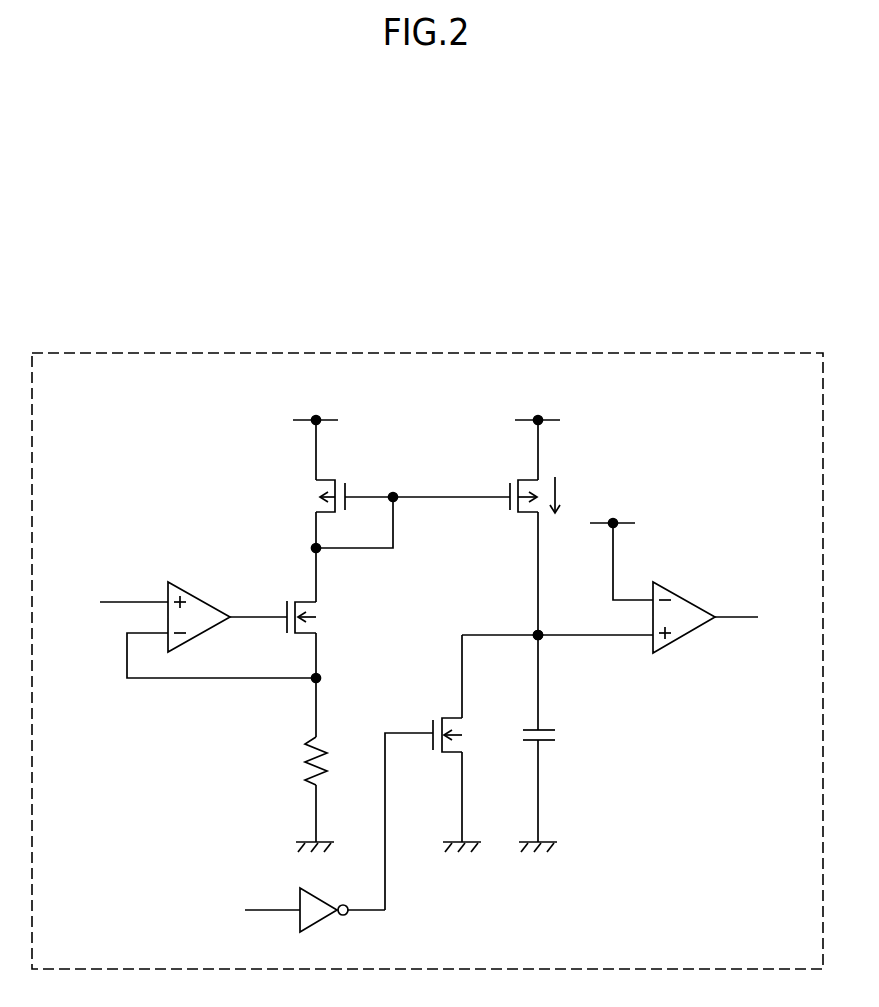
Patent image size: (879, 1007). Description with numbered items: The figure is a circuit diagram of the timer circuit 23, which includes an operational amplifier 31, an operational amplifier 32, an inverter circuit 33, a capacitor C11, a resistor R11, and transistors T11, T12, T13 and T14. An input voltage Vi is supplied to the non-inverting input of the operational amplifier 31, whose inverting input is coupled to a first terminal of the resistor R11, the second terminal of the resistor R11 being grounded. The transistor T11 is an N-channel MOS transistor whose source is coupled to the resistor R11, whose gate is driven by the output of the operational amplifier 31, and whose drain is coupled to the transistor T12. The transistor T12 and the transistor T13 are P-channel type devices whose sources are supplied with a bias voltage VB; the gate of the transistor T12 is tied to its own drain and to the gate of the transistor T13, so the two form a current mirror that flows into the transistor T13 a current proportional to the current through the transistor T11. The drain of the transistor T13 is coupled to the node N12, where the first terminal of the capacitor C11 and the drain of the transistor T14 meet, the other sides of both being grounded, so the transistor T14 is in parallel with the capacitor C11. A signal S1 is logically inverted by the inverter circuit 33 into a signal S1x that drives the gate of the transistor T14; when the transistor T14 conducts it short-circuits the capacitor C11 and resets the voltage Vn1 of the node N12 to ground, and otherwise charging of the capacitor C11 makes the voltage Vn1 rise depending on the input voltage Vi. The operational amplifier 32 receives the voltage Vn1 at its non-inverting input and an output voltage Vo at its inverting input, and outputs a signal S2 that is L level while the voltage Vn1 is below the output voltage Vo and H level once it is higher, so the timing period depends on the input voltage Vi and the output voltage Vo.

The timer circuit 23 is at (740, 352).
The operational amplifier 31 is at (208, 603).
The operational amplifier 32 is at (690, 600).
The inverter circuit 33 is at (319, 921).
The transistor T11 is at (285, 602).
The transistor T12 is at (345, 481).
The transistor T13 is at (510, 481).
The transistor T14 is at (433, 720).
The resistor R11 is at (305, 752).
The capacitor C11 is at (553, 720).
The node N12 is at (535, 633).
The bias voltage VB is at (426, 408).
The input voltage Vi is at (122, 602).
The output voltage Vo is at (612, 510).
The voltage Vn1 is at (557, 623).
The signal S1 is at (260, 910).
The signal S1x is at (385, 898).
The signal S2 is at (751, 617).